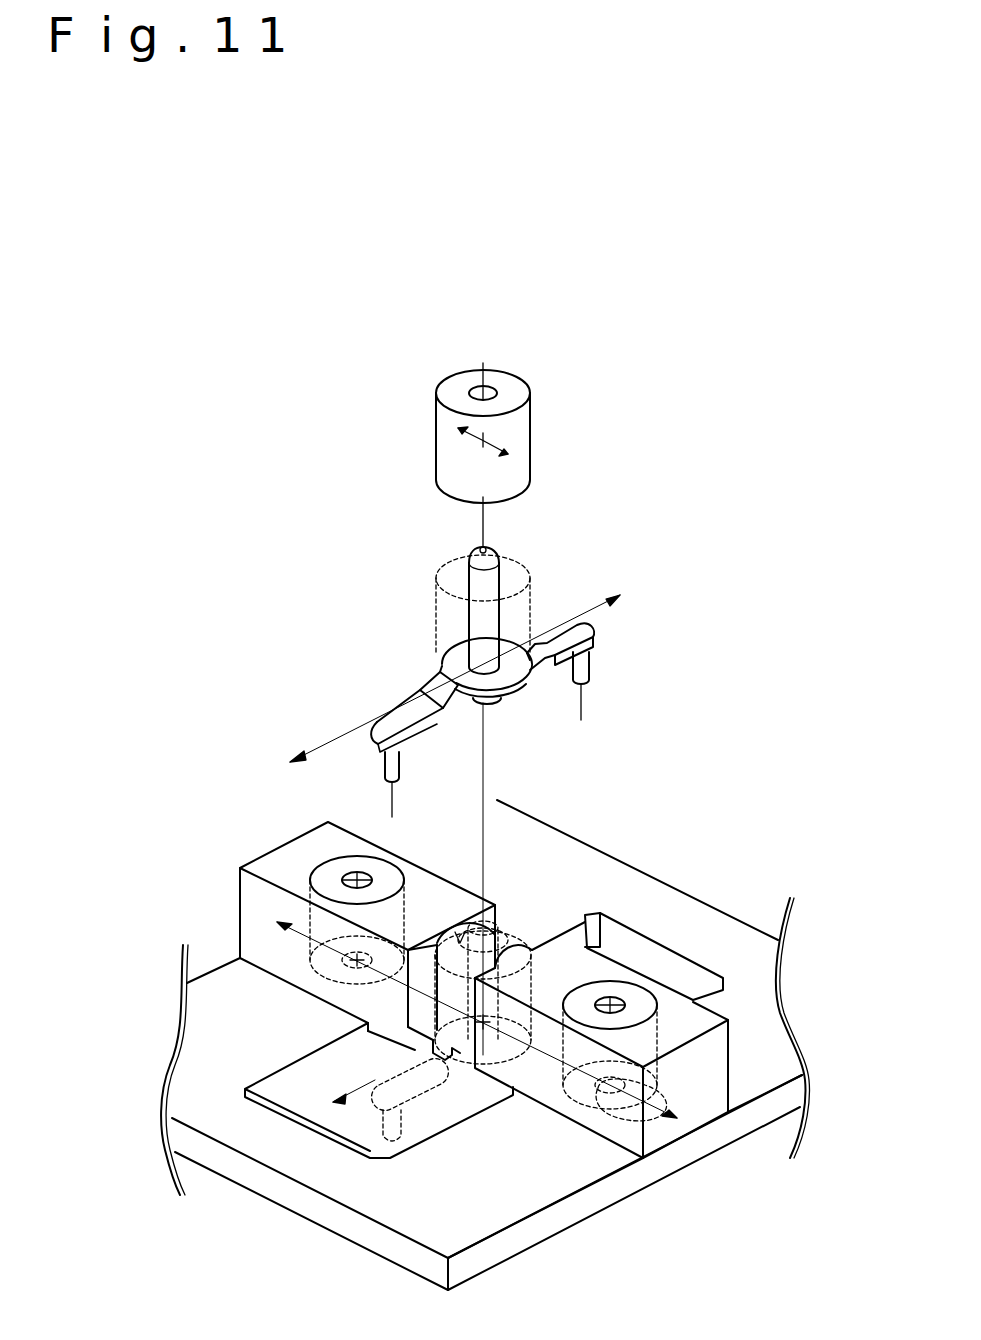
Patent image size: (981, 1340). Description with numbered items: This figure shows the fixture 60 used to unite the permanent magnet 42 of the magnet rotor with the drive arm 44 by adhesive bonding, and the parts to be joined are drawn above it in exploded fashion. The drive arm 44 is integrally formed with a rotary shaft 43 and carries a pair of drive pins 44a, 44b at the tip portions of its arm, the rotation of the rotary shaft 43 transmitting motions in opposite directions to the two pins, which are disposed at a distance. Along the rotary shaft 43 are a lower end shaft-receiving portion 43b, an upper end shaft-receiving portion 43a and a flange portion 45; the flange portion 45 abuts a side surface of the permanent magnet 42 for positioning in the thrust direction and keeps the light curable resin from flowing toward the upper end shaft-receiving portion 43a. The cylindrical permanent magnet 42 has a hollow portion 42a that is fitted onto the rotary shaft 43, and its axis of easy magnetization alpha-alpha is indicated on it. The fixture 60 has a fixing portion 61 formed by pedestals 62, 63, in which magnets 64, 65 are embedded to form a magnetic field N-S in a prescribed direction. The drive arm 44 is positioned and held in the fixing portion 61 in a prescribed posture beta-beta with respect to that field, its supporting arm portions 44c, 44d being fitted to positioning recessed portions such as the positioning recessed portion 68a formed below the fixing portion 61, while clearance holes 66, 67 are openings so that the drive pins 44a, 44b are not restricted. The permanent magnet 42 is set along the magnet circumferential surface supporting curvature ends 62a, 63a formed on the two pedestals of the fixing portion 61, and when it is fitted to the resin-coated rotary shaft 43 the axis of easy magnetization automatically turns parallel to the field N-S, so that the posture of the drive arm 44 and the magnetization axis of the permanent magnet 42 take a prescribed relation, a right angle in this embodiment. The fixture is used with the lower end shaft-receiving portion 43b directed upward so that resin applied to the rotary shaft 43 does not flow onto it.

The permanent magnet 42 is at (440, 436).
The hollow portion 42a is at (492, 390).
The rotary shaft 43 is at (499, 600).
The upper end shaft-receiving portion 43a is at (494, 703).
The lower end shaft-receiving portion 43b is at (490, 548).
The drive arm 44 is at (427, 672).
The drive pin 44a is at (585, 684).
The drive pin 44b is at (396, 782).
The supporting arm portion 44c is at (540, 661).
The supporting arm portion 44d is at (452, 705).
The flange portion 45 is at (455, 656).
The fixture 60 is at (585, 860).
The fixing portion 61 is at (460, 990).
The pedestal 62 is at (290, 866).
The magnet circumferential surface supporting curvature end 62a is at (485, 900).
The pedestal 63 is at (695, 1058).
The groove of right bearing block 63a is at (512, 950).
The magnet 64 is at (387, 868).
The magnet 65 is at (640, 996).
The clearance hole 66 is at (443, 1118).
The clearance hole 67 is at (631, 939).
The positioning recessed portion 68a is at (452, 1066).